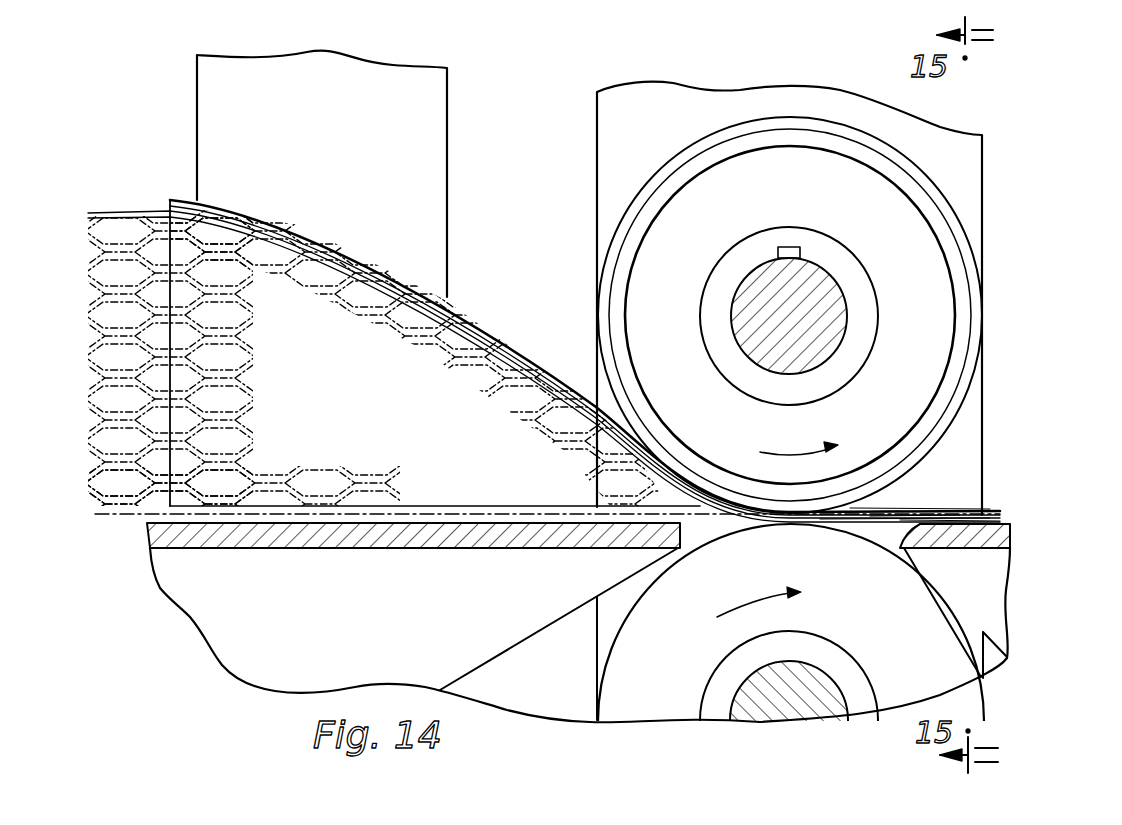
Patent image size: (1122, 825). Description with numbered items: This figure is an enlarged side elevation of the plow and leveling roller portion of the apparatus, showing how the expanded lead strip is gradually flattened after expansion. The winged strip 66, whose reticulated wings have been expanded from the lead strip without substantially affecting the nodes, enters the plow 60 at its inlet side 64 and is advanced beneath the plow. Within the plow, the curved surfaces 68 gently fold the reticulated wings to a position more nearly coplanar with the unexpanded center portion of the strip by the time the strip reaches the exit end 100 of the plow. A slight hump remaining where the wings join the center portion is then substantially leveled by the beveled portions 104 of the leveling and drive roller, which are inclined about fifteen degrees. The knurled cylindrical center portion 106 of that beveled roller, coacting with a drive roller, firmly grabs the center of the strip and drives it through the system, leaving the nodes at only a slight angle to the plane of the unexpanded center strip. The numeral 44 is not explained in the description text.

The pressure roller 44 is at (790, 287).
The plow 60 is at (487, 317).
The inlet side 64 is at (170, 200).
The winged strip 66 is at (137, 212).
The curved surfaces 68 is at (350, 330).
The exit end 100 is at (655, 480).
The beveled portions 104 is at (636, 207).
The cylindrical center portion 106 is at (776, 117).